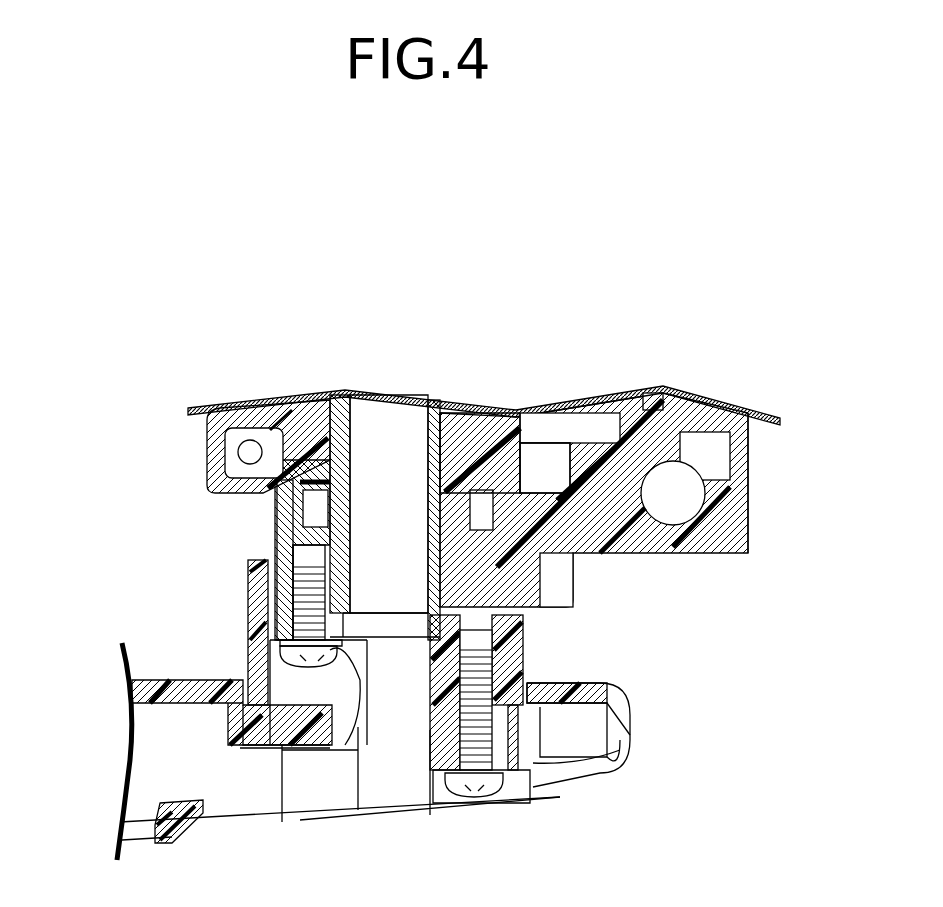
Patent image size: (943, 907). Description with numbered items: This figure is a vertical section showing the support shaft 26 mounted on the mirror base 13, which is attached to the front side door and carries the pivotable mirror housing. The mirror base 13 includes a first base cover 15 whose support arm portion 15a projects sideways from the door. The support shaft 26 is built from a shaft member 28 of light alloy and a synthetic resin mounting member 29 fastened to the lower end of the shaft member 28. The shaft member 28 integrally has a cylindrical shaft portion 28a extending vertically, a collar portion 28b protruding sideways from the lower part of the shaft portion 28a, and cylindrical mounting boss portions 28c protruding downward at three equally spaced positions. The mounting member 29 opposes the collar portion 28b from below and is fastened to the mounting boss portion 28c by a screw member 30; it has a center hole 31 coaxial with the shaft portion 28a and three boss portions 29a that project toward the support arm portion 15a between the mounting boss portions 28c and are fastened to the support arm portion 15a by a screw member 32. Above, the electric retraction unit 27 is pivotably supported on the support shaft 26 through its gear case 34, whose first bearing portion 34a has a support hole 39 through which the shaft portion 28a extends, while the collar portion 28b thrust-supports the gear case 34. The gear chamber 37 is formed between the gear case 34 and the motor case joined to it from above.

The mirror base 13 is at (158, 680).
The first base cover 15 is at (158, 813).
The support arm portion 15a is at (605, 698).
The support shaft 26 is at (86, 500).
The electric retraction unit 27 is at (756, 483).
The shaft member 28 is at (262, 503).
The shaft portion 28a is at (342, 398).
The collar portion 28b is at (540, 470).
The mounting boss portion 28c is at (250, 613).
The mounting member 29 is at (248, 597).
The boss portion 29a is at (433, 697).
The screw member 30 is at (297, 652).
The center hole 31 is at (348, 645).
The screw member 32 is at (455, 805).
The gear case 34 is at (732, 548).
The first bearing portion 34a is at (462, 437).
The gear chamber 37 is at (318, 406).
The support hole 39 is at (353, 452).